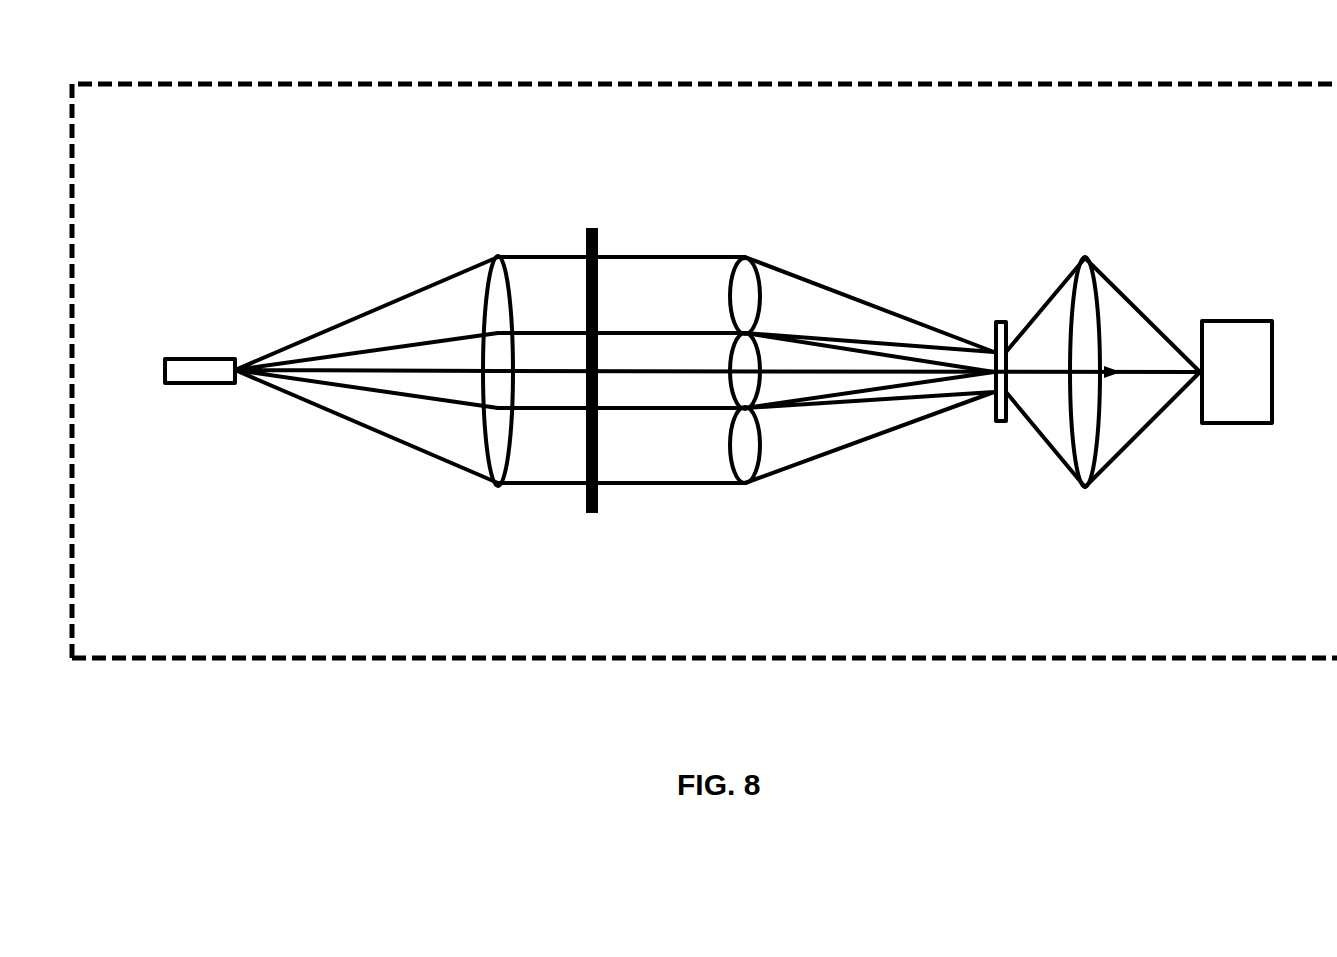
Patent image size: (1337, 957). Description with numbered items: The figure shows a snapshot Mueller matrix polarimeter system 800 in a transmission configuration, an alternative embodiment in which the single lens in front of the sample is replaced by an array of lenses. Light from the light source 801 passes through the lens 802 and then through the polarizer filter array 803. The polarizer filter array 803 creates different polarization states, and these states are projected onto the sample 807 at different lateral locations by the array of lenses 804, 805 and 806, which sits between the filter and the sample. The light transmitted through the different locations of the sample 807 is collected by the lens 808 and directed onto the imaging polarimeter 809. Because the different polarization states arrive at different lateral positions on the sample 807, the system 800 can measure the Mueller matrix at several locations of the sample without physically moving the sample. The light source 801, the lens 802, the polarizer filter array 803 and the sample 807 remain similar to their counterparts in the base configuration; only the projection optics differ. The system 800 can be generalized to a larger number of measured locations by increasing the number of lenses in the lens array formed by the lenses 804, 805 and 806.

The system 800 is at (704, 338).
The light source 801 is at (188, 383).
The lens 802 is at (510, 453).
The polarizer filter array 803 is at (598, 500).
The lens 804 is at (757, 281).
The lens 805 is at (758, 378).
The lens 806 is at (748, 485).
The sample 807 is at (1000, 422).
The lens 808 is at (1097, 303).
The imaging polarimeter 809 is at (1273, 338).